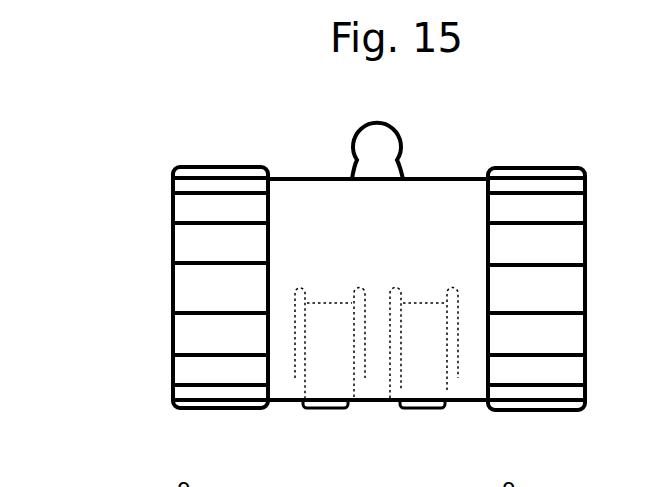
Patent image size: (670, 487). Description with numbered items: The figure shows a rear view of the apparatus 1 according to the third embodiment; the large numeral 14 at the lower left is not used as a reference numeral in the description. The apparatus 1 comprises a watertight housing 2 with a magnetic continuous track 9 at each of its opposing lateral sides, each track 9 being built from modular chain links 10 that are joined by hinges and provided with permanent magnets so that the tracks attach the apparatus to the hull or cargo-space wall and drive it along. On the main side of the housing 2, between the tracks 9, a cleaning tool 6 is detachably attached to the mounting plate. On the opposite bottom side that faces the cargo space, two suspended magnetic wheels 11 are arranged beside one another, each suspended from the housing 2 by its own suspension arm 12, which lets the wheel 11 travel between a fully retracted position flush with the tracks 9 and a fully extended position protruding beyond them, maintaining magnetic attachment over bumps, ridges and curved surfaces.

The apparatus 1 is at (124, 152).
The watertight housing 2 is at (340, 218).
The cleaning tool 6 is at (397, 140).
The magnetic continuous track 9 is at (212, 143).
The link 10 is at (182, 275).
The suspended magnetic wheel 11 is at (333, 403).
The suspension arm 12 is at (294, 365).
The housing section 14 is at (32, 447).